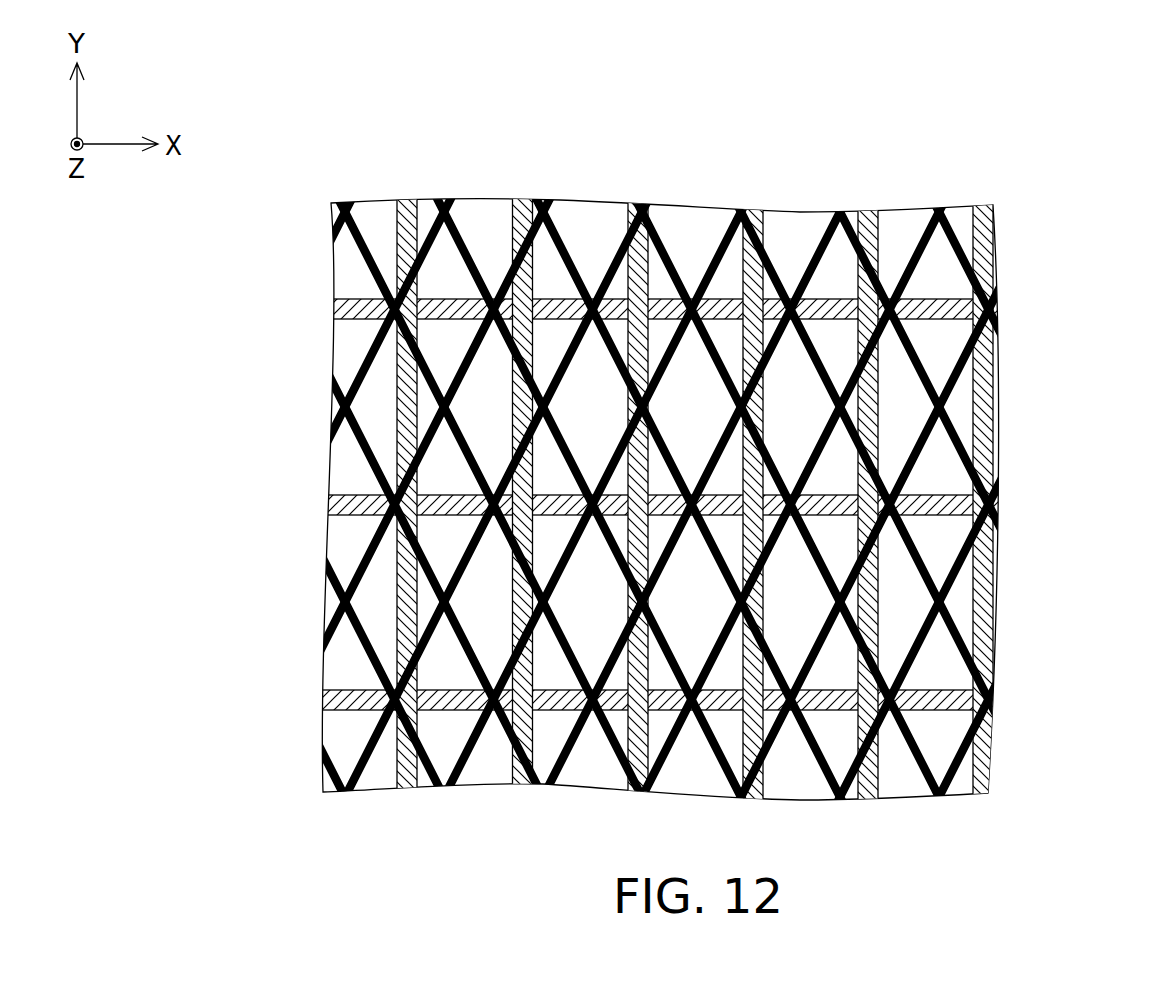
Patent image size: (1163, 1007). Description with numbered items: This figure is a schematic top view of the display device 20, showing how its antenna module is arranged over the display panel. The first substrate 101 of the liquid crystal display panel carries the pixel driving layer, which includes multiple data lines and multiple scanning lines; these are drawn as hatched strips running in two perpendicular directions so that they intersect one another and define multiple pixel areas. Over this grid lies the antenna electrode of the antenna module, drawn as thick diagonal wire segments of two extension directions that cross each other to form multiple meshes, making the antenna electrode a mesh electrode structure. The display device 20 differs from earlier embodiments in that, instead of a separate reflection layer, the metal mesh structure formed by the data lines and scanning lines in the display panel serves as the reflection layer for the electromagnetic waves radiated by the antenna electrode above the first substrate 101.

The display device 20 is at (1137, 797).
The first substrate 101 is at (892, 210).